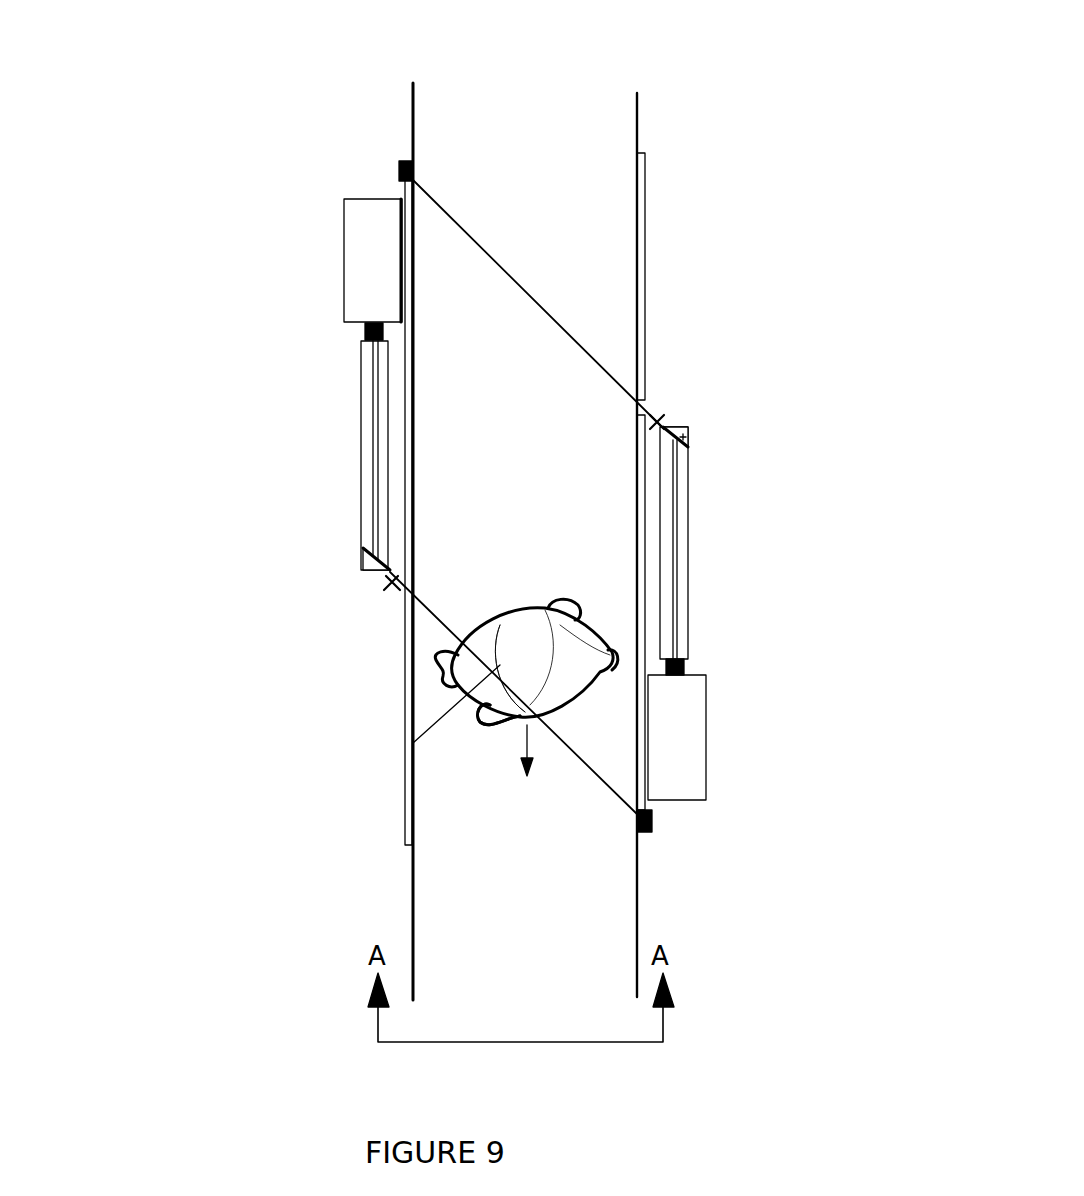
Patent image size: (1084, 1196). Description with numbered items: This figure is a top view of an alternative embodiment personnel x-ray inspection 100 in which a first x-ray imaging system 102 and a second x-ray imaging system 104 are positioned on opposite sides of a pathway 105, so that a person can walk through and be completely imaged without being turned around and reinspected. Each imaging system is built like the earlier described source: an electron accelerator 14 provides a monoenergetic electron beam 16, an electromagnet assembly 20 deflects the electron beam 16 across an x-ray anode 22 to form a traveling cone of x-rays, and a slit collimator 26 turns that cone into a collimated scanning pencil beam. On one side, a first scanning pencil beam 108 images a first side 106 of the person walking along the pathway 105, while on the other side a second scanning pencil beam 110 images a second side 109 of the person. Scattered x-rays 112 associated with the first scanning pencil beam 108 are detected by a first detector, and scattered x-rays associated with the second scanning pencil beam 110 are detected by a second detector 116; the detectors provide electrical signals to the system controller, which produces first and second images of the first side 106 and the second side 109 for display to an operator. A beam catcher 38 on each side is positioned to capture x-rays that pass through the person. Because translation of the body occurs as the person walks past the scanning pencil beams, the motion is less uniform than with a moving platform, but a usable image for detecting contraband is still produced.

The personnel x-ray inspection 100 is at (795, 104).
The first x-ray imaging system 102 is at (197, 509).
The second x-ray imaging system 104 is at (706, 593).
The electron accelerator 14 is at (358, 226).
The electron beam 16 is at (383, 463).
The electromagnet assembly 20 is at (362, 332).
The x-ray anode 22 is at (363, 565).
The slit collimator 26 is at (664, 420).
The beam catcher 38 is at (399, 172).
The pathway 105 is at (505, 637).
The first side 106 is at (477, 700).
The first scanning pencil beam 108 is at (477, 627).
The second side 109 is at (590, 790).
The second scanning pencil beam 110 is at (520, 283).
The scattered x-rays 112 is at (424, 695).
The second detector 116 is at (638, 177).